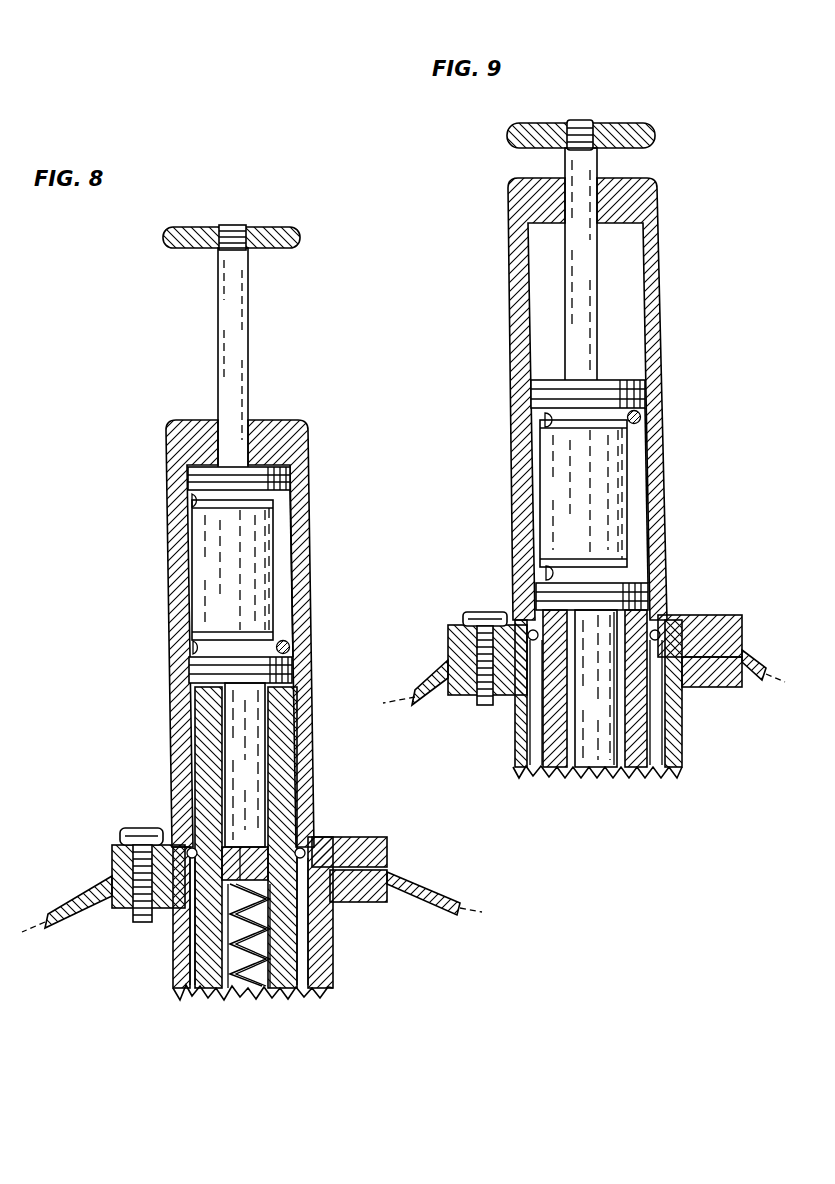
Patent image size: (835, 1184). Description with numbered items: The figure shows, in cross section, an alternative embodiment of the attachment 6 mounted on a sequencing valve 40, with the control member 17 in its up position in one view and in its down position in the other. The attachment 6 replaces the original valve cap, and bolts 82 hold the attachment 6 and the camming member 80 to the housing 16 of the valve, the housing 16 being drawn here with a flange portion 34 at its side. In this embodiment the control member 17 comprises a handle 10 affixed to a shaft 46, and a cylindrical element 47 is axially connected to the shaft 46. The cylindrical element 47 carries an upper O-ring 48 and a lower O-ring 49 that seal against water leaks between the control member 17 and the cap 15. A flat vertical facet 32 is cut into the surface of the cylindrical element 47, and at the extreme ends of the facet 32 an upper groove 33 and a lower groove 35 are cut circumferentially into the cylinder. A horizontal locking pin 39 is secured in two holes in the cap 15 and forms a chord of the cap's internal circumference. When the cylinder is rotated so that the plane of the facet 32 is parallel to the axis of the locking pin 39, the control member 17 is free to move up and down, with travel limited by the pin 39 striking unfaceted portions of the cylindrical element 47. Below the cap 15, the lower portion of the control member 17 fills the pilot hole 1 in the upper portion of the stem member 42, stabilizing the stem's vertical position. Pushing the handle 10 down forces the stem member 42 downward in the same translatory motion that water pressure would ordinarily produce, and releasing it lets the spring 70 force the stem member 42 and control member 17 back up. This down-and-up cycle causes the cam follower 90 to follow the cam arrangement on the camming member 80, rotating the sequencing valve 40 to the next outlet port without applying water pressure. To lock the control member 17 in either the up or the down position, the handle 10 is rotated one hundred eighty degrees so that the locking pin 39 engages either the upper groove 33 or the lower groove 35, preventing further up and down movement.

In FIG. 8, the pilot hole 1 is at (266, 848).
In FIG. 9, the pilot hole 1 is at (622, 764).
In FIG. 8, the attachment 6 is at (325, 476).
In FIG. 9, the attachment 6 is at (692, 463).
In FIG. 8, the handle 10 is at (252, 226).
In FIG. 9, the handle 10 is at (630, 126).
In FIG. 8, the cap 15 is at (170, 431).
In FIG. 9, the cap 15 is at (653, 233).
In FIG. 8, the housing 16 is at (98, 880).
In FIG. 9, the housing 16 is at (448, 660).
In FIG. 8, the control member 17 is at (256, 760).
In FIG. 9, the control member 17 is at (591, 766).
In FIG. 8, the flat vertical facet 32 is at (276, 556).
In FIG. 9, the flat vertical facet 32 is at (631, 490).
In FIG. 8, the upper groove 33 is at (192, 500).
In FIG. 9, the upper groove 33 is at (536, 421).
In FIG. 9, the flange 34 is at (663, 628).
In FIG. 8, the lower groove 35 is at (195, 648).
In FIG. 9, the lower groove 35 is at (548, 575).
In FIG. 8, the locking pin 39 is at (289, 642).
In FIG. 9, the locking pin 39 is at (640, 416).
In FIG. 8, the sequencing valve 40 is at (412, 880).
In FIG. 9, the sequencing valve 40 is at (752, 655).
In FIG. 8, the stem member 42 is at (208, 752).
In FIG. 9, the stem member 42 is at (641, 745).
In FIG. 8, the shaft 46 is at (223, 278).
In FIG. 8, the cylindrical element 47 is at (200, 553).
In FIG. 9, the cylindrical element 47 is at (558, 469).
In FIG. 8, the upper O-ring 48 is at (190, 487).
In FIG. 9, the upper O-ring 48 is at (646, 390).
In FIG. 8, the lower O-ring 49 is at (300, 668).
In FIG. 9, the lower O-ring 49 is at (651, 586).
In FIG. 8, the spring 70 is at (335, 962).
In FIG. 8, the camming member 80 is at (330, 916).
In FIG. 9, the bolts 82 is at (478, 612).
In FIG. 8, the cam follower 90 is at (305, 850).
In FIG. 9, the cam follower 90 is at (595, 697).